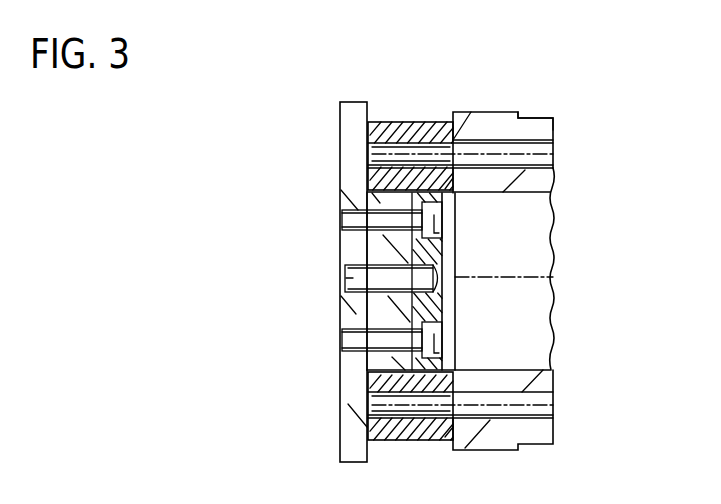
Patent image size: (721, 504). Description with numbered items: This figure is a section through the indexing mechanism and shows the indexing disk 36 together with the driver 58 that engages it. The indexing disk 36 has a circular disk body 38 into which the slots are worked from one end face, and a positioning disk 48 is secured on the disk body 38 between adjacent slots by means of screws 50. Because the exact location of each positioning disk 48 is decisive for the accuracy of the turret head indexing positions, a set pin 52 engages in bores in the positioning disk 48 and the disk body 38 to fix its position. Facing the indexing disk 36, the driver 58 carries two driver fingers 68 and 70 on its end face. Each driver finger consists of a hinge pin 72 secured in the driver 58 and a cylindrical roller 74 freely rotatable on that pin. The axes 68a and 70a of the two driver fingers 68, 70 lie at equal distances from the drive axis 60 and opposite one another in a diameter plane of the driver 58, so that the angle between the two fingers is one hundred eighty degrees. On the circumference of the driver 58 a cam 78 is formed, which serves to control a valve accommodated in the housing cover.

The indexing disk 36 is at (332, 172).
The disk body 38 is at (353, 123).
The positioning disk 48 is at (443, 300).
The screws 50 is at (358, 217).
The set pin 52 is at (367, 277).
The driver 58 is at (505, 100).
The drive axis 60 is at (557, 273).
The driver finger 68 is at (388, 112).
The axis of driver finger 68a is at (553, 153).
The driver finger 70 is at (360, 380).
The axis of driver finger 70a is at (552, 404).
The hinge pin 72 is at (373, 148).
The cylindrical roller 74 is at (425, 130).
The cam 78 is at (560, 106).